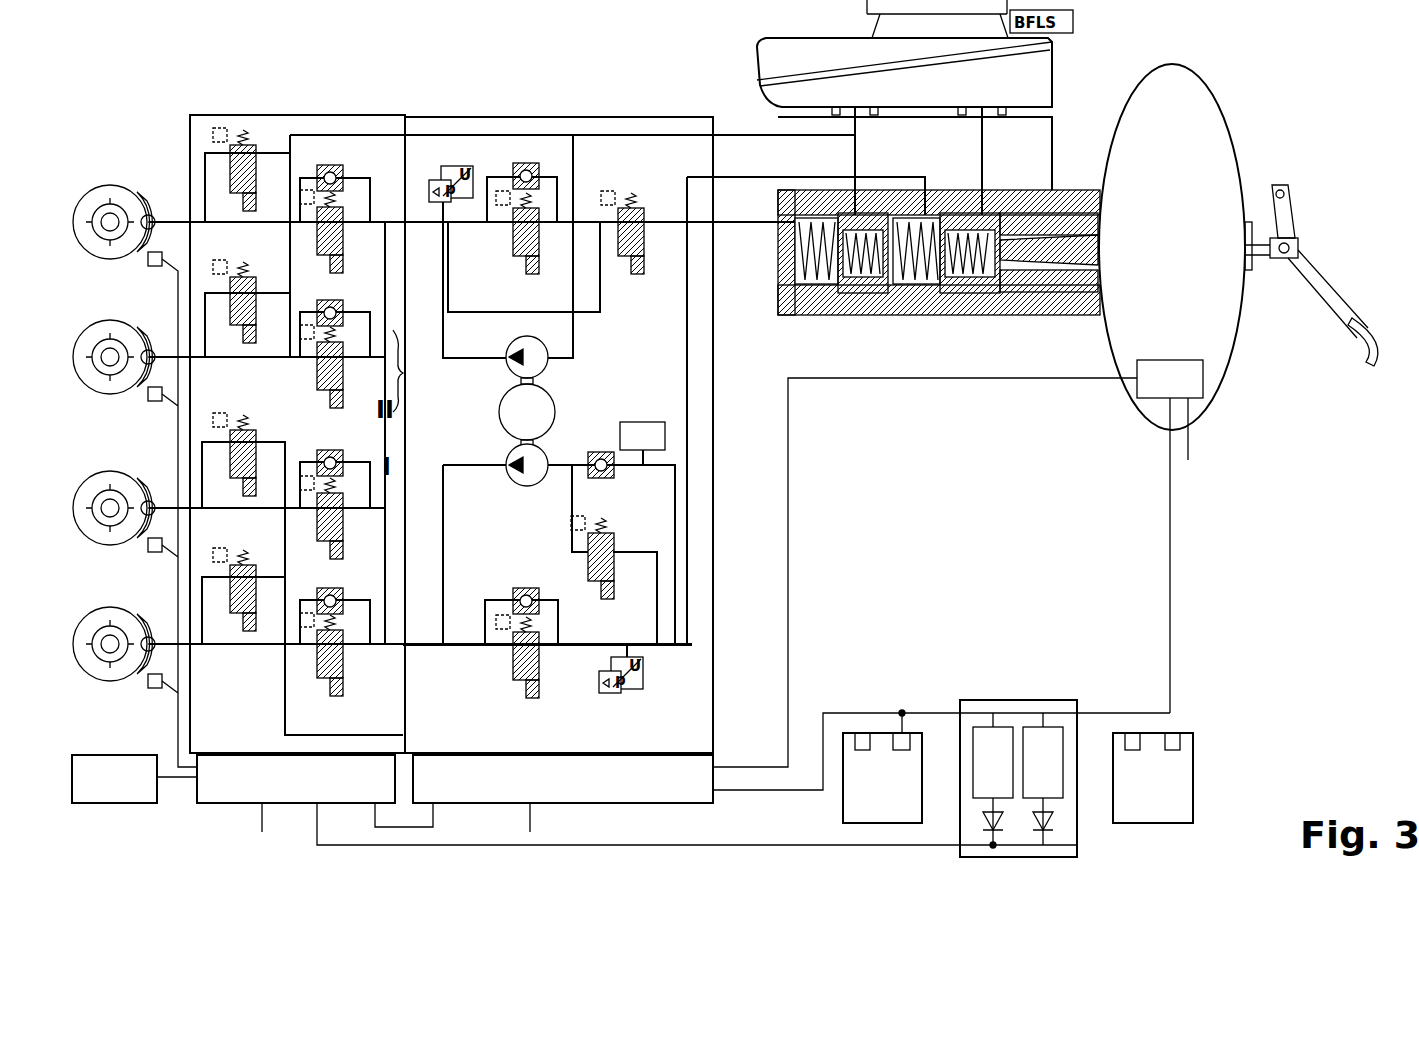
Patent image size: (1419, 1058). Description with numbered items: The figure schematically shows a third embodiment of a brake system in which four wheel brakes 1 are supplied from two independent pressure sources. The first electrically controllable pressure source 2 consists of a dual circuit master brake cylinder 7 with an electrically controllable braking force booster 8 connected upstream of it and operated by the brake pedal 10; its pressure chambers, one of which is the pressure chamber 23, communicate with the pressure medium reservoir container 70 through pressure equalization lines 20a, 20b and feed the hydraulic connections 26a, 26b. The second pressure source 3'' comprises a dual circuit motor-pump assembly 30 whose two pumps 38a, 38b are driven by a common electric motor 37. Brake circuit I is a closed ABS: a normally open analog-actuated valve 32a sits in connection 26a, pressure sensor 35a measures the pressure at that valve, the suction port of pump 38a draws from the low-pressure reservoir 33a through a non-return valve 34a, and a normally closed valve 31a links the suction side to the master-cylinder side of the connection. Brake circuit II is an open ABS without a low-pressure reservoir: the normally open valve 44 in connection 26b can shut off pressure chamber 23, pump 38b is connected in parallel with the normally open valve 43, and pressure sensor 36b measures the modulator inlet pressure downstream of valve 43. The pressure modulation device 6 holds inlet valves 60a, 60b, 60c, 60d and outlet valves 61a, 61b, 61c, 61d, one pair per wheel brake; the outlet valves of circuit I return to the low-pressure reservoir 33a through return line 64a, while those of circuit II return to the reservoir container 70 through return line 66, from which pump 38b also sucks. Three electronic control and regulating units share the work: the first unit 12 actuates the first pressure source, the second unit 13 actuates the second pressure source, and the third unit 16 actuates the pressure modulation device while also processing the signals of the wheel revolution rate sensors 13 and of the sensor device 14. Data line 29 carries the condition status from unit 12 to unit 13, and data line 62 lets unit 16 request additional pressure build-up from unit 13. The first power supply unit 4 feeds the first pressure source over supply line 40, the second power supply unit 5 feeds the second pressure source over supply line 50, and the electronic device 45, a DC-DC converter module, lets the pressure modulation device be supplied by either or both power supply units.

The wheel brakes 1 is at (143, 205).
The first electrically controllable pressure source 2 is at (1214, 72).
The second pressure source 3'' is at (559, 388).
The first electrical power supply unit 4 is at (1152, 825).
The second electrical power supply unit 5 is at (882, 825).
The pressure modulation device 6 is at (262, 108).
The master brake cylinder 7 is at (803, 300).
The braking force booster 8 is at (1218, 160).
The brake pedal 10 is at (1312, 280).
The first electronic control and regulating unit 12 is at (1205, 385).
The second electronic control and regulating unit / wheel revolution rate sensor 13 is at (148, 260).
The sensor device 14 is at (115, 805).
The third electronic control and regulating unit 16 is at (227, 805).
The pressure equalization line 20a is at (982, 127).
The pressure equalization line 20b is at (858, 142).
The pressure chamber 23 is at (838, 292).
The hydraulic connection 26a is at (735, 182).
The hydraulic connection 26b is at (762, 272).
The data line 29 is at (1030, 380).
The motor-pump assembly 30 is at (482, 410).
The normally closed valve 31a is at (588, 570).
The normally open analog-actuated valve 32a is at (545, 670).
The low-pressure reservoir 33a is at (643, 420).
The non-return valve 34a is at (598, 480).
The pressure sensor 35a is at (650, 680).
The pressure sensor 36b is at (457, 163).
The electric motor 37 is at (502, 420).
The pump 38a is at (548, 460).
The pump 38b is at (545, 372).
The supply line 40 is at (1178, 575).
The normally open valve 43 is at (512, 242).
The normally open valve 44 is at (640, 262).
The electronic device 45 is at (1020, 696).
The supply line 50 is at (853, 713).
The inlet valve 60a is at (345, 660).
The inlet valve 60b is at (345, 520).
The inlet valve 60c is at (345, 380).
The inlet valve 60d is at (345, 235).
The outlet valve 61a is at (250, 625).
The outlet valve 61b is at (250, 490).
The outlet valve 61c is at (250, 340).
The outlet valve 61d is at (250, 205).
The data line 62 is at (435, 827).
The return line 64a is at (285, 700).
The return line 66 is at (355, 132).
The pressure medium reservoir container 70 is at (820, 45).